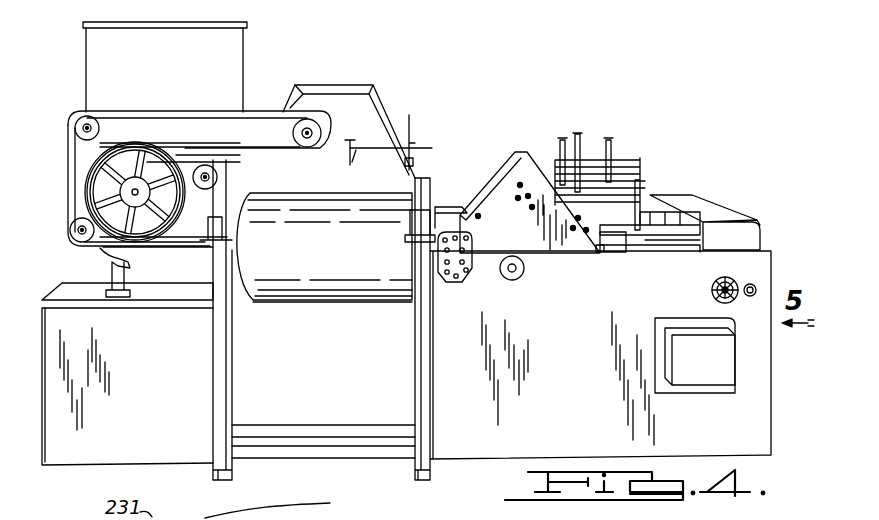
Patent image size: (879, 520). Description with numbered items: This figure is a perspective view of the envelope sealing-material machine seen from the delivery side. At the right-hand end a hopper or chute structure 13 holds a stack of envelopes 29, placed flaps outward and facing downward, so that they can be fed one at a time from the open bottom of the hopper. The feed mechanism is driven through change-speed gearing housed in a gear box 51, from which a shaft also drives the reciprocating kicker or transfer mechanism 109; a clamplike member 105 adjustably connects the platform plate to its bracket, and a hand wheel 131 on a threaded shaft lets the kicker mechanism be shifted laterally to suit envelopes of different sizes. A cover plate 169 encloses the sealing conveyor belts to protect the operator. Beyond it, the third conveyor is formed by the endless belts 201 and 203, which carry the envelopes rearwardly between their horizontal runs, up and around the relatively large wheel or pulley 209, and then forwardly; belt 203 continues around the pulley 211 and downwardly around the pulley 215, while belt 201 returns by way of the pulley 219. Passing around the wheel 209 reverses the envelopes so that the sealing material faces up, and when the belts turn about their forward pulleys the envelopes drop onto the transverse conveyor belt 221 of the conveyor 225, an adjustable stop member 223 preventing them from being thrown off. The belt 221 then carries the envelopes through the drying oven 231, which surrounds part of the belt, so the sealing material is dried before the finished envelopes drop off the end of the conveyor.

The hopper or chute structure 13 is at (592, 146).
The stack of envelopes 29 is at (598, 172).
The gear box 51 is at (692, 195).
The clamplike member 105 is at (600, 253).
The kicker or transfer mechanism 109 is at (669, 244).
The hand wheel 131 is at (711, 290).
The cover plate 169 is at (514, 156).
The endless belt 201 is at (288, 140).
The endless belt 203 is at (258, 110).
The wheel or pulley 209 is at (143, 160).
The pulley 211 is at (320, 129).
The pulley 215 is at (90, 117).
The pulley 219 is at (207, 191).
The conveyor belt 221 is at (345, 273).
The adjustable stop member 223 is at (349, 150).
The conveyor 225 is at (375, 312).
The drying oven 231 is at (390, 106).